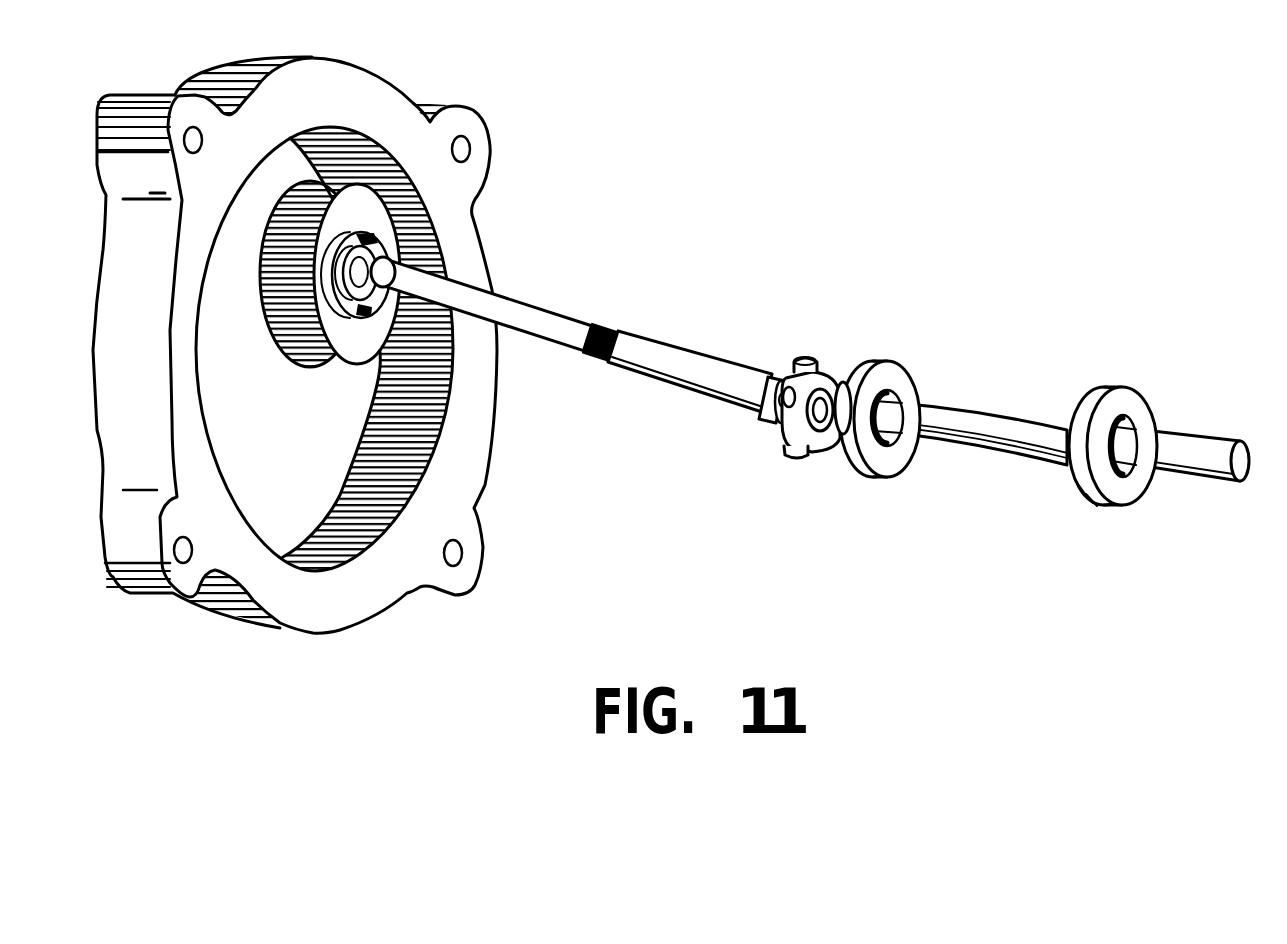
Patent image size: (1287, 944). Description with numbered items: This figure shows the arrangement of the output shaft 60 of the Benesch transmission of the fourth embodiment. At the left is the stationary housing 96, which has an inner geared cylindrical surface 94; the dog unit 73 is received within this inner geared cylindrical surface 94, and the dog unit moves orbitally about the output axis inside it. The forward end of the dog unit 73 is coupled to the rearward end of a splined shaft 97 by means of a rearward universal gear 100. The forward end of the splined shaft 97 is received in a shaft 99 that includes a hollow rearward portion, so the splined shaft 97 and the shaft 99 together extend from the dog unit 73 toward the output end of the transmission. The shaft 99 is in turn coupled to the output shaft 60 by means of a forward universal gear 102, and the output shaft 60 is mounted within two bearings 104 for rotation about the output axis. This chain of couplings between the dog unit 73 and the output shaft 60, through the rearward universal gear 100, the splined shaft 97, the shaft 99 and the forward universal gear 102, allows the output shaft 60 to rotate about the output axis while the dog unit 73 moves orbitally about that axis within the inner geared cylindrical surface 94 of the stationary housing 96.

The output shaft 60 is at (1187, 450).
The dog unit 73 is at (392, 344).
The inner geared cylindrical surface 94 is at (337, 533).
The stationary housing 96 is at (444, 505).
The splined shaft 97 is at (566, 330).
The shaft 99 is at (683, 356).
The rearward universal gear 100 is at (389, 264).
The forward universal gear 102 is at (813, 356).
The bearings 104 is at (917, 341).